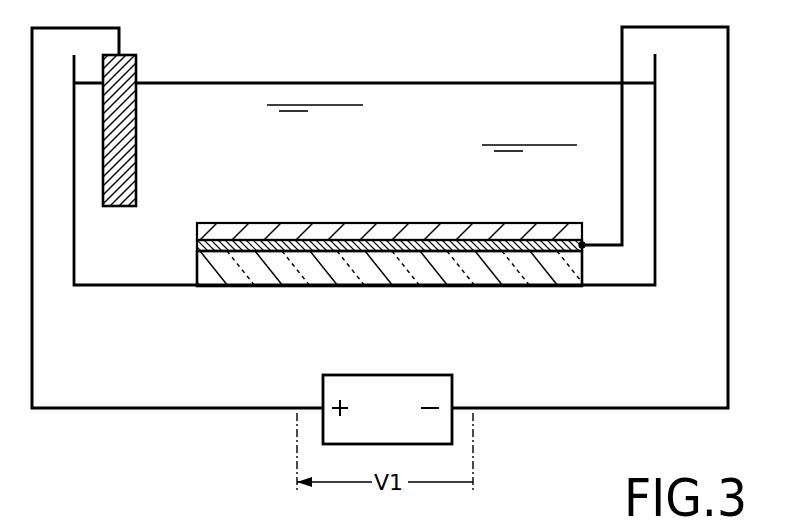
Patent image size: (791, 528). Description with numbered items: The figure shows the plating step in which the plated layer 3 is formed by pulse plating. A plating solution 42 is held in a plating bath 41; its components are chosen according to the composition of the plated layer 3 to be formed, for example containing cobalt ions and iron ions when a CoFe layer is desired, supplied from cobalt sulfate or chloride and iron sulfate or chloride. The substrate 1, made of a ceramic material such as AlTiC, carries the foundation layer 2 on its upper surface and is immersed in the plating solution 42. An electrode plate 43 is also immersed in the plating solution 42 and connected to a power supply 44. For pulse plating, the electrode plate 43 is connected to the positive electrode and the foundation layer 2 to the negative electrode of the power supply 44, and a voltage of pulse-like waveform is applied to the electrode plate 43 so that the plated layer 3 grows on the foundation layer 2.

The substrate 1 is at (202, 262).
The foundation layer 2 is at (202, 243).
The plated layer 3 is at (203, 229).
The plating bath 41 is at (655, 66).
The plating solution 42 is at (241, 146).
The electrode plate 43 is at (125, 67).
The power supply 44 is at (390, 385).